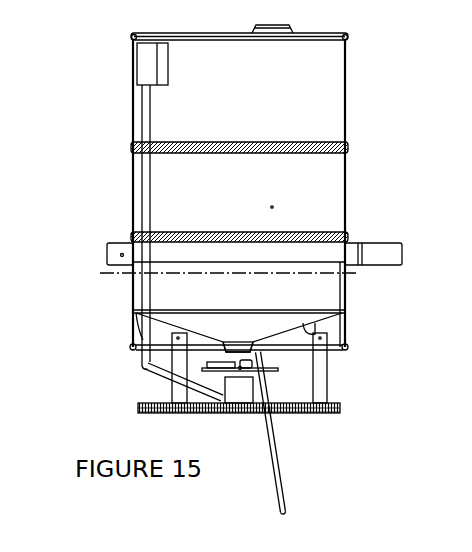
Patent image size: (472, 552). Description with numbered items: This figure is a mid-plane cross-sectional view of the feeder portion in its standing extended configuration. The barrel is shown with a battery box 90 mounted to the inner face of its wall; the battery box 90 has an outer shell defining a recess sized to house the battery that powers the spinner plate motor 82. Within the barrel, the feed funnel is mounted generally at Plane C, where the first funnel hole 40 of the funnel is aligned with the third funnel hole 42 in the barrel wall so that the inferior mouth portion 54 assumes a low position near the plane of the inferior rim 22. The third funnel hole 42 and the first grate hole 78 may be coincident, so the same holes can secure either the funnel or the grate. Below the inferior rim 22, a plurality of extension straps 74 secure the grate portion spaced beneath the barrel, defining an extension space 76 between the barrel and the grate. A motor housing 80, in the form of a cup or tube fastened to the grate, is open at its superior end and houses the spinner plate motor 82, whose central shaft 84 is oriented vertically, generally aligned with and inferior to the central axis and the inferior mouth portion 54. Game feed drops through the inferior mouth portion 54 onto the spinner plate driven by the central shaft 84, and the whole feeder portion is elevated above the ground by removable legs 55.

The first funnel hole 40 is at (273, 128).
The battery box 90 is at (147, 67).
The third funnel hole 42 is at (218, 303).
The first grate hole 78 is at (271, 274).
The inferior rim 22 is at (128, 344).
The extension strap 74 is at (169, 392).
The motor housing 80 is at (220, 402).
The spinner plate motor 82 is at (245, 388).
The central shaft 84 is at (241, 371).
The extension space 76 is at (303, 371).
The inferior mouth portion 54 is at (260, 353).
The removable leg 55 is at (289, 484).